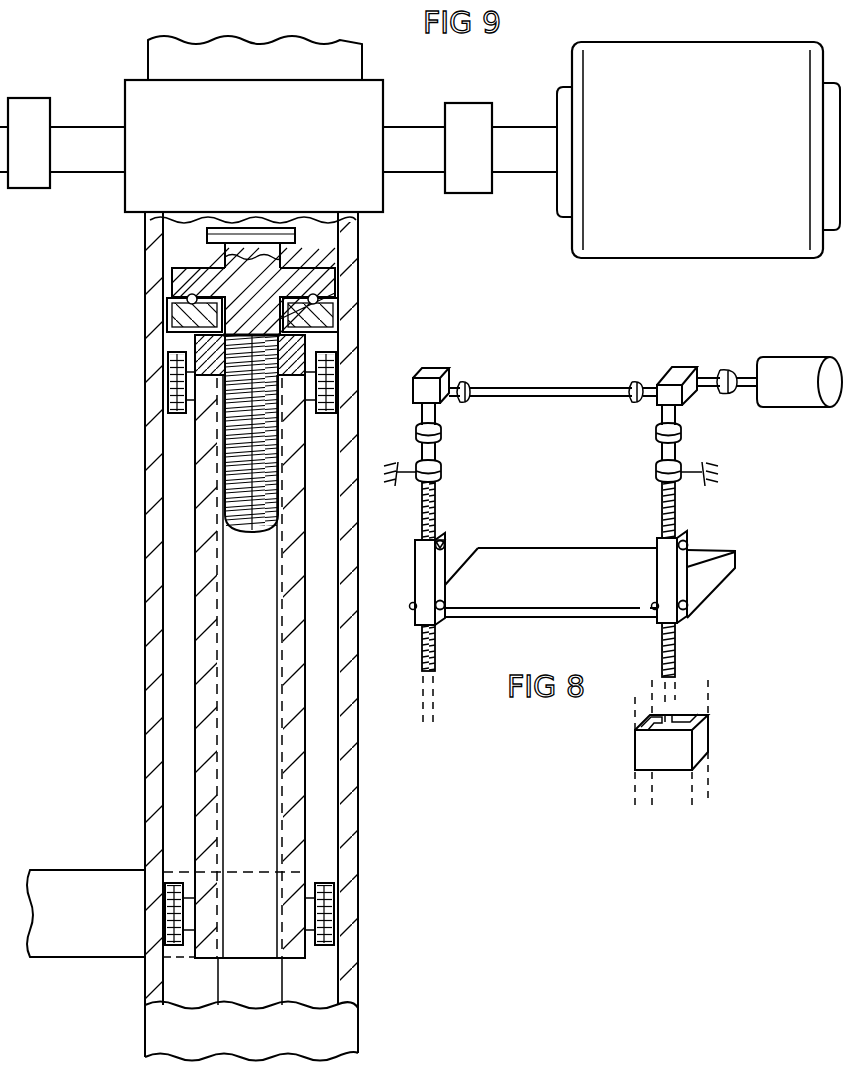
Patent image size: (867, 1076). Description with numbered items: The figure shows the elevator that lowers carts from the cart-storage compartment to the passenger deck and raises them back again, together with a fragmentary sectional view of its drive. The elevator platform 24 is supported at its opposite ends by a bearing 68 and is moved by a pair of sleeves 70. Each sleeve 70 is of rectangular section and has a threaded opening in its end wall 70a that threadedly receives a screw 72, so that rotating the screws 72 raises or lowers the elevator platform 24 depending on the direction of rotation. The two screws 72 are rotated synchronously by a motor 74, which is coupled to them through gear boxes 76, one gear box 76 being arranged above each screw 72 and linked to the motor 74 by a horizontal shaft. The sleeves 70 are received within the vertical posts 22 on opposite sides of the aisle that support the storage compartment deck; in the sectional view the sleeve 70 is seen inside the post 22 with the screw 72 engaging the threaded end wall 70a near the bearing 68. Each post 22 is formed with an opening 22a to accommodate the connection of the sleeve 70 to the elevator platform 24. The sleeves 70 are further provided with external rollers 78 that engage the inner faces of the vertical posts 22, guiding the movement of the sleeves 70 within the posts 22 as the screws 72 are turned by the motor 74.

In FIG. 9, the vertical post 22 is at (158, 568).
In FIG. 8, the vertical post 22 is at (697, 752).
In FIG. 8, the opening 22a is at (700, 718).
In FIG. 8, the elevator platform 24 is at (563, 560).
In FIG. 9, the bearing 68 is at (177, 317).
In FIG. 9, the sleeve 70 is at (296, 708).
In FIG. 8, the sleeve 70 is at (430, 590).
In FIG. 9, the end wall 70a is at (340, 318).
In FIG. 8, the end wall 70a is at (442, 538).
In FIG. 8, the screw 72 is at (437, 503).
In FIG. 9, the motor 74 is at (705, 60).
In FIG. 8, the motor 74 is at (780, 368).
In FIG. 8, the gear box 76 is at (680, 373).
In FIG. 9, the roller 78 is at (168, 372).
In FIG. 8, the roller 78 is at (445, 545).